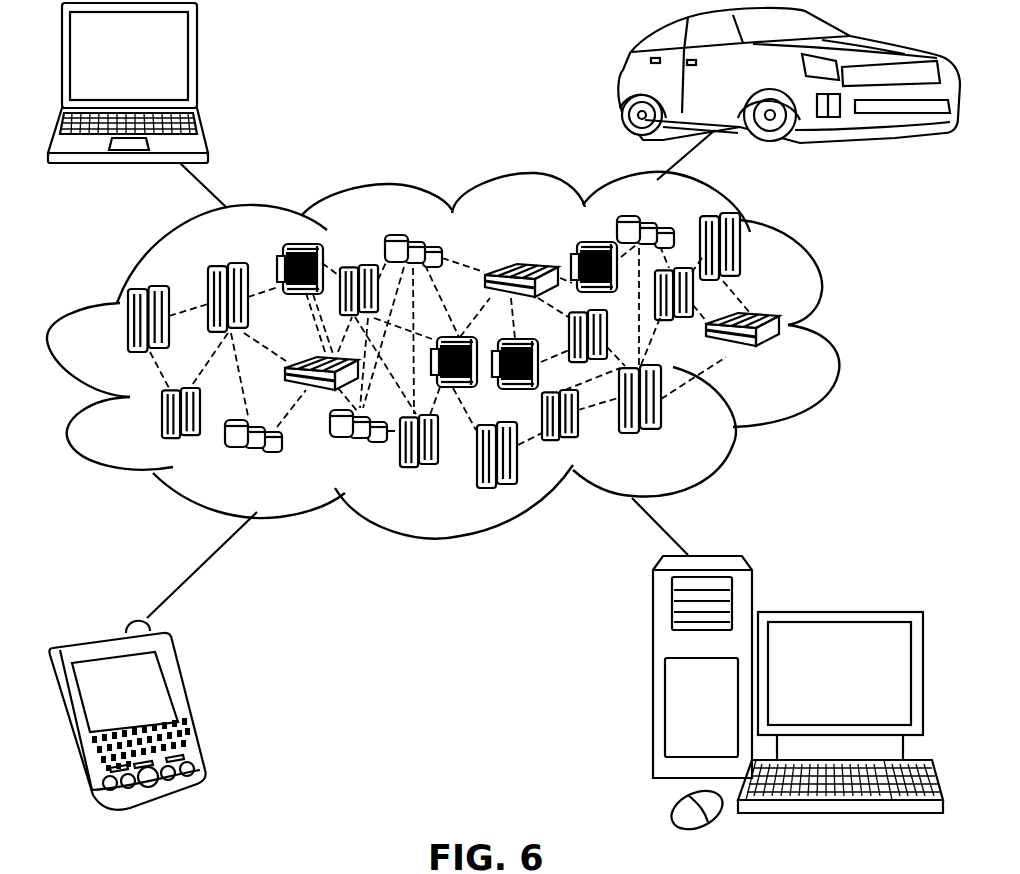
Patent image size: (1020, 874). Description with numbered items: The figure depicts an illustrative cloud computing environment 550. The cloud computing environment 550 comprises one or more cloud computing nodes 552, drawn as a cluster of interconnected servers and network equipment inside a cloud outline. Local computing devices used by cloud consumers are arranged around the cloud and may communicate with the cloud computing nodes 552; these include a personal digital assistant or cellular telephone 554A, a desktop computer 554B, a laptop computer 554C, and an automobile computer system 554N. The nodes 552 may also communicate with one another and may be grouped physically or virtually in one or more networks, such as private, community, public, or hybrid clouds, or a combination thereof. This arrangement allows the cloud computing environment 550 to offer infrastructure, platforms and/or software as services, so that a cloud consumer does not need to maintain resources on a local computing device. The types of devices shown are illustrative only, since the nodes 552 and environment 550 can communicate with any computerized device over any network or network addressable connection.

The cloud computing environment 550 is at (835, 327).
The cloud computing nodes 552 is at (778, 358).
The personal digital assistant (PDA) or cellular telephone 554A is at (187, 702).
The desktop computer 554B is at (837, 610).
The laptop computer 554C is at (197, 62).
The automobile computer system 554N is at (620, 78).